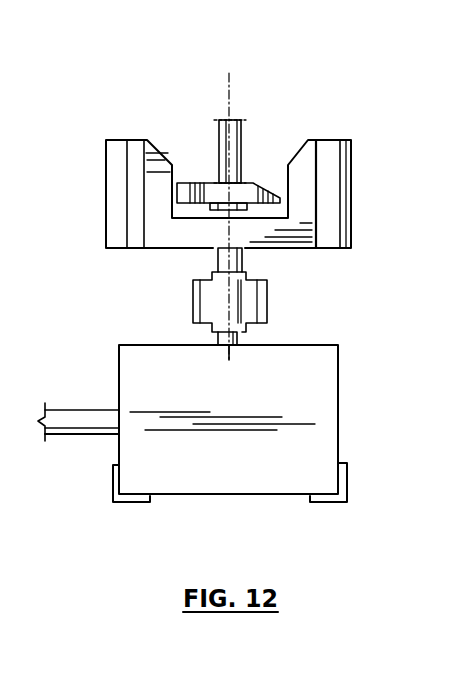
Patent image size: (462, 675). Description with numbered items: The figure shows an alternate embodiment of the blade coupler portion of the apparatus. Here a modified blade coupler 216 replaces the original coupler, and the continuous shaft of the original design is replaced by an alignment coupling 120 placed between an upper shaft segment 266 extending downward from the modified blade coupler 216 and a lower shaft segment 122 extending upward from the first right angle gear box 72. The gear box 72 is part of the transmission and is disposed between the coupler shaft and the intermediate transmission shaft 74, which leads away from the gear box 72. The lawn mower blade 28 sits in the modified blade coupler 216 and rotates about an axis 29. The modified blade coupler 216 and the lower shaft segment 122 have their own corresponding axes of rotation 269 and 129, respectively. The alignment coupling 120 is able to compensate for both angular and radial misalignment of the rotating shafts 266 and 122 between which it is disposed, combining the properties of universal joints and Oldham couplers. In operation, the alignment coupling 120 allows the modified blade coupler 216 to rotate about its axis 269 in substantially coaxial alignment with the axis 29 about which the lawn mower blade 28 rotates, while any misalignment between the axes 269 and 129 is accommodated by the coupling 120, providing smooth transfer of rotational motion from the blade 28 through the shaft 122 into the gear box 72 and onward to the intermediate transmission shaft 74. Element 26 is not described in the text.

The axis 29 is at (232, 86).
The shaft 26 is at (219, 137).
The lawn mower blade 28 is at (250, 180).
The modified blade coupler 216 is at (308, 213).
The axis of rotation 269 is at (229, 232).
The upper shaft segment 266 is at (243, 256).
The alignment coupling 120 is at (268, 297).
The lower shaft segment 122 is at (247, 337).
The axis of rotation 129 is at (227, 355).
The first right angle gear box 72 is at (330, 413).
The intermediate transmission shaft 74 is at (72, 430).